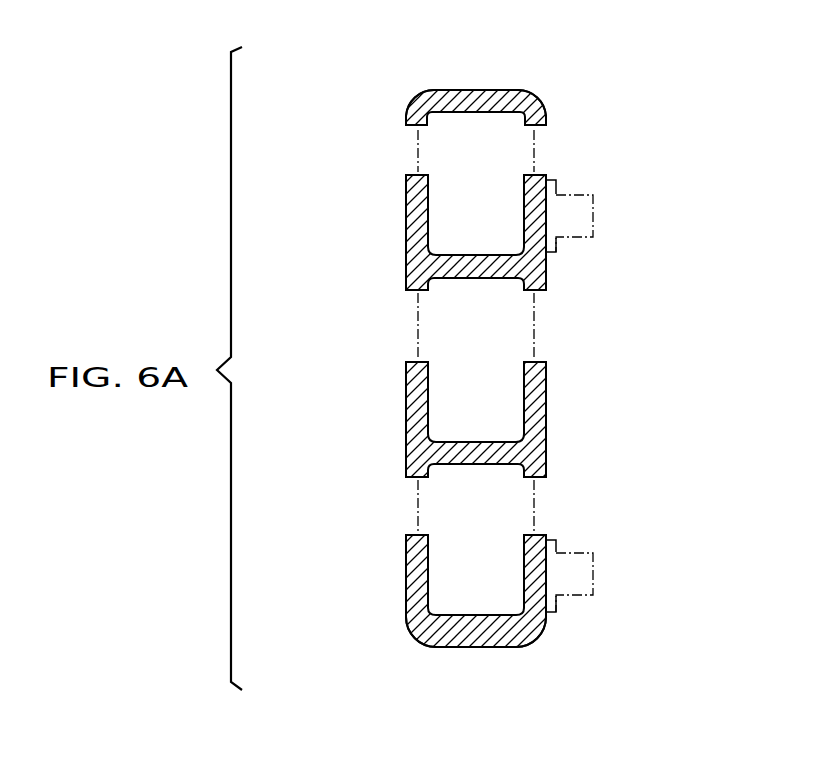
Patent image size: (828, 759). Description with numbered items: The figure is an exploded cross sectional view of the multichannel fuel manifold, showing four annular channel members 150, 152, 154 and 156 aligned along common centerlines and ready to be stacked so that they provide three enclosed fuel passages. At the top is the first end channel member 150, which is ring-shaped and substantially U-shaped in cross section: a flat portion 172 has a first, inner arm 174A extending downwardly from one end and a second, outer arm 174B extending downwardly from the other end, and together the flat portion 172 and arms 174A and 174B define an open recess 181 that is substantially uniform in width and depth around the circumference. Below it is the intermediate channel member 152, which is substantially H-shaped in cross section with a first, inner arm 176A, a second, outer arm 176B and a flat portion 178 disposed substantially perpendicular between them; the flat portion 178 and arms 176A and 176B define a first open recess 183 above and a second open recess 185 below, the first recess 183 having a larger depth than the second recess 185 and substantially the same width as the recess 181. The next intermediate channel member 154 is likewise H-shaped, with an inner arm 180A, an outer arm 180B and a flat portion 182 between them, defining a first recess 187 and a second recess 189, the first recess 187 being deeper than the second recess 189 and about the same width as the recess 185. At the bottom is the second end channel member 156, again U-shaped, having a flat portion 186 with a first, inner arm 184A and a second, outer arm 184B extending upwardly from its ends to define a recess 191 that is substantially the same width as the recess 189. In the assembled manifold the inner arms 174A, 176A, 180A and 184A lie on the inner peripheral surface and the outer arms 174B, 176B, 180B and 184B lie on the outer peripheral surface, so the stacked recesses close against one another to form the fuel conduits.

The first end channel member 150 is at (540, 91).
The intermediate channel member 152 is at (407, 269).
The intermediate channel member 154 is at (407, 454).
The second end channel member 156 is at (415, 639).
The flat portion 172 is at (443, 90).
The inner arm 174A is at (410, 117).
The outer arm 174B is at (541, 116).
The inner arm 176A is at (407, 212).
The outer arm 176B is at (546, 210).
The flat portion 178 is at (452, 265).
The inner arm 180A is at (406, 388).
The outer arm 180B is at (546, 392).
The open recess 181 is at (453, 114).
The flat portion 182 is at (493, 452).
The first open recess 183 is at (494, 254).
The inner arm 184A is at (406, 574).
The outer arm 184B is at (540, 590).
The second open recess 185 is at (489, 280).
The flat portion 186 is at (477, 642).
The first recess 187 is at (470, 441).
The second recess 189 is at (501, 466).
The recess 191 is at (467, 615).